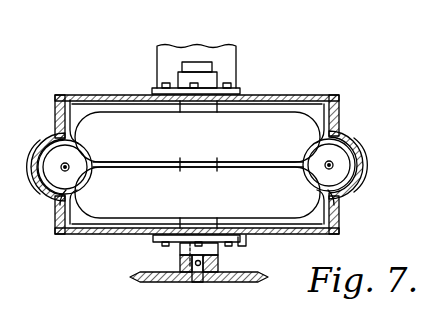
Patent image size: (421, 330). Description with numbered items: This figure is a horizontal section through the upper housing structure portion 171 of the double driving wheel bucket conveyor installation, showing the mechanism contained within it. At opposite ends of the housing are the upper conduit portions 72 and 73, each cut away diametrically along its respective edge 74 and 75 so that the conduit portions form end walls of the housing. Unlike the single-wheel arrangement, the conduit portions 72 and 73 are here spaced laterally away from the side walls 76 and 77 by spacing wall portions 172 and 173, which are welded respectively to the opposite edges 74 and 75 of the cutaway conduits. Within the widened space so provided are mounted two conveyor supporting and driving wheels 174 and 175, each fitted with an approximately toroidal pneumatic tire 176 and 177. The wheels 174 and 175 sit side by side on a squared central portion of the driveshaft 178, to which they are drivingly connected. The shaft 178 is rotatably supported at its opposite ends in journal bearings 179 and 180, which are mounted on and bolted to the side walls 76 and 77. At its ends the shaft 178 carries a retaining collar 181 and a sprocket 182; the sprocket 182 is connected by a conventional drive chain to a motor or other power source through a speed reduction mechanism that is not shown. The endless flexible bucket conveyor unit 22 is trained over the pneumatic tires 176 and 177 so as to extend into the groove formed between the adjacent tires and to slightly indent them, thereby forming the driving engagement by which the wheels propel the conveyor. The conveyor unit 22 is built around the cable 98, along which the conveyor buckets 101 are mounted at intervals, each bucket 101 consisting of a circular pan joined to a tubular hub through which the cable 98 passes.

The upper housing structure portion 171 is at (57, 97).
The spacing wall portion 172 is at (341, 114).
The spacing wall portion 173 is at (55, 123).
The conveyor supporting and driving wheel 174 is at (118, 128).
The conveyor supporting and driving wheel 175 is at (118, 207).
The pneumatic tire 176 is at (250, 112).
The pneumatic tire 177 is at (253, 248).
The driveshaft 178 is at (199, 276).
The journal bearing 179 is at (212, 80).
The journal bearing 180 is at (183, 251).
The retaining collar 181 is at (197, 66).
The sprocket 182 is at (163, 284).
The cutaway edge 74 is at (323, 94).
The cutaway edge 75 is at (70, 100).
The side wall 76 is at (291, 95).
The side wall 77 is at (285, 235).
The upper conduit portion 72 is at (358, 151).
The upper conduit portion 73 is at (33, 171).
The cable 98 is at (60, 165).
The endless flexible bucket conveyor unit 22 is at (42, 187).
The conveyor bucket 101 is at (66, 236).